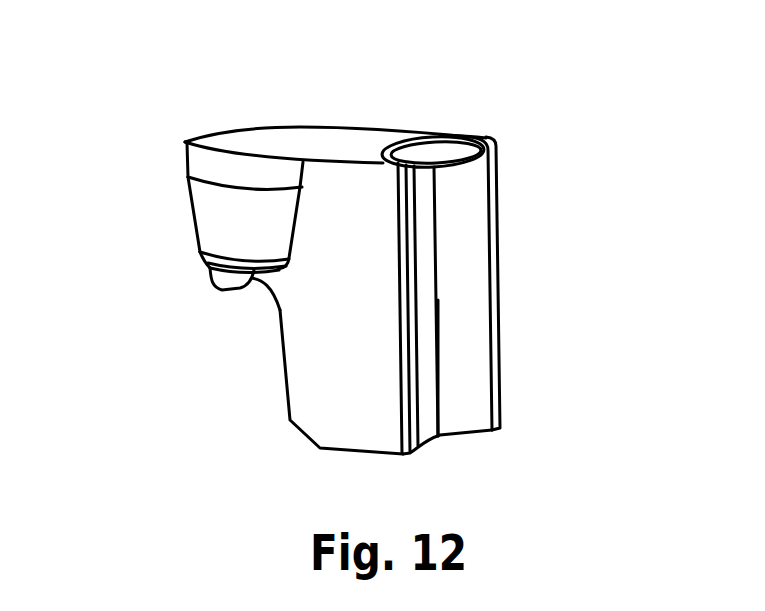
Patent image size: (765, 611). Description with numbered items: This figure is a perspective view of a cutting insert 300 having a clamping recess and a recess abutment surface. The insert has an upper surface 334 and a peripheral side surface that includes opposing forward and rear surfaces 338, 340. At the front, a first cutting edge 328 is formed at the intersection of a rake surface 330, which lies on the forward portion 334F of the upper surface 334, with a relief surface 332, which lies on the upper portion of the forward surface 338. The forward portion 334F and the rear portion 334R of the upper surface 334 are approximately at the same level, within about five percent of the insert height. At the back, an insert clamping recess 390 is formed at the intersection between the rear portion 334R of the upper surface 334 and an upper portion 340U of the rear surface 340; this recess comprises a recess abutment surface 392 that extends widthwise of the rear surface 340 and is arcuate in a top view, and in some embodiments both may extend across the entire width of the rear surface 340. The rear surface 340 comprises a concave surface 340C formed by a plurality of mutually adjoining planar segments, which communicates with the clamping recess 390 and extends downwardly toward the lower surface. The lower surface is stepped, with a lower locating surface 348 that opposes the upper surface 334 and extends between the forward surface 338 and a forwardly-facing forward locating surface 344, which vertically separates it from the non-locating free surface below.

The cutting insert 300 is at (499, 47).
The first cutting edge 328 is at (185, 145).
The rake surface 330 is at (238, 147).
The relief surface 332 is at (183, 160).
The upper surface 334 is at (343, 145).
The forward portion of the upper surface 334F is at (186, 128).
The rear portion of the upper surface 334R is at (453, 137).
The forward surface 338 is at (188, 252).
The rear surface 340 is at (462, 407).
The upper portion of the rear surface 340U is at (477, 188).
The concave surface 340C is at (475, 350).
The forward locating surface 344 is at (280, 368).
The lower locating surface 348 is at (232, 292).
The insert clamping recess 390 is at (437, 150).
The recess abutment surface 392 is at (456, 152).